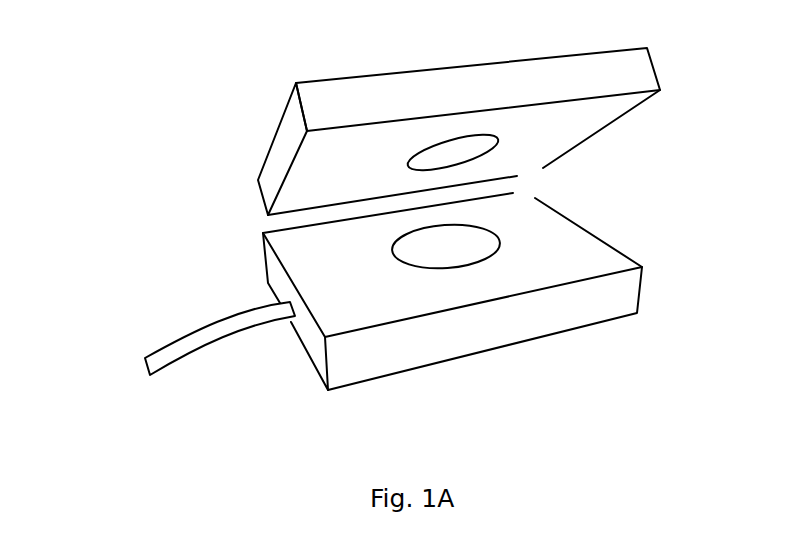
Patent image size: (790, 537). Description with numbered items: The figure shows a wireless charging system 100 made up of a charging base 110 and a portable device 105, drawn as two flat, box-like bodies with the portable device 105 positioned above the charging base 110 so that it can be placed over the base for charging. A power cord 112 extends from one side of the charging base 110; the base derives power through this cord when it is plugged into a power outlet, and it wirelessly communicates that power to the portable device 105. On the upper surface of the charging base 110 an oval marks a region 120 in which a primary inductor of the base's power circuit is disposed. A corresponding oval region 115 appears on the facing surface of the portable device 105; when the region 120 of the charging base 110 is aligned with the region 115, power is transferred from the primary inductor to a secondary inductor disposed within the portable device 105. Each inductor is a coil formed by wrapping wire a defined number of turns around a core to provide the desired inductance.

The wireless charging system 100 is at (114, 64).
The portable device 105 is at (287, 132).
The charging base 110 is at (270, 271).
The power cord 112 is at (182, 360).
The region of the portable device 115 is at (489, 145).
The region of the charging base 120 is at (473, 229).